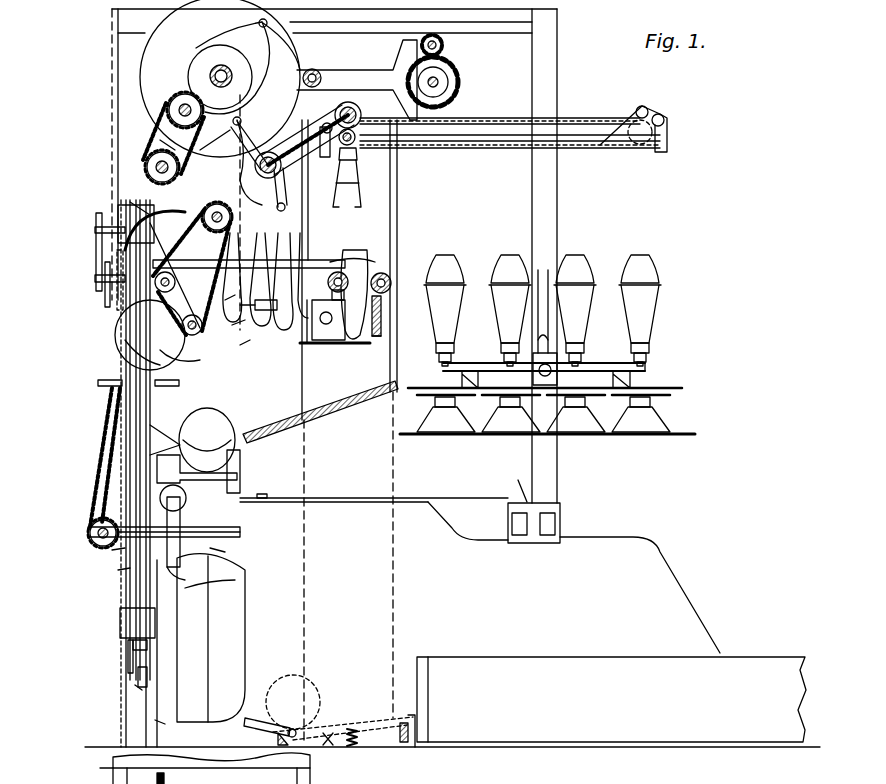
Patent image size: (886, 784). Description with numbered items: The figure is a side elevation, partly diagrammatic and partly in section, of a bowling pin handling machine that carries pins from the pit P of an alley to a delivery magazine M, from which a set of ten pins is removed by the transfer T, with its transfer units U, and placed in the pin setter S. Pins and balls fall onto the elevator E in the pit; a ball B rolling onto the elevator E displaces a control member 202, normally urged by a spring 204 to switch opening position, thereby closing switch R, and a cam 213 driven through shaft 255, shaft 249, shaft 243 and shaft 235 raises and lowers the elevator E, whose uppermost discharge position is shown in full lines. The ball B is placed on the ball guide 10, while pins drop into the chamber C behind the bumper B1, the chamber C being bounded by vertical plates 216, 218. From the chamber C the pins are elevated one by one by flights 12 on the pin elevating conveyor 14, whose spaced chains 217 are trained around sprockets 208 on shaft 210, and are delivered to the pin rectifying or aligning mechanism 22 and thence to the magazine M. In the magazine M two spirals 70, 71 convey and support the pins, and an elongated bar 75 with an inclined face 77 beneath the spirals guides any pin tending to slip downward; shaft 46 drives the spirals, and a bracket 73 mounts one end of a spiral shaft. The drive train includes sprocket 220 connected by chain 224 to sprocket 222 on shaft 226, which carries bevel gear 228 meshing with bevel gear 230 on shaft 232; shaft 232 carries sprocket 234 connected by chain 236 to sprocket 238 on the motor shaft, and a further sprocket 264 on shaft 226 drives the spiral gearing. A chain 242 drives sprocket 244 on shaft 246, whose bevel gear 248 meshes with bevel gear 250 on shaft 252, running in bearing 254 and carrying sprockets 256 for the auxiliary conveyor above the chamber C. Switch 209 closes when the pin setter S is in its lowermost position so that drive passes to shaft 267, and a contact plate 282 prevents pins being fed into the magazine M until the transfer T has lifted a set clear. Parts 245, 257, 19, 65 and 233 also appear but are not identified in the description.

The cam 213 is at (246, 22).
The shaft 235 is at (215, 75).
The shaft 243 is at (182, 104).
The drive chain 245 is at (168, 118).
The shaft 249 is at (160, 140).
The lower sprocket 257 is at (148, 165).
The sprockets 208 is at (140, 185).
The switch 209 is at (130, 202).
The sprocket 220 is at (118, 218).
The shaft 210 is at (96, 230).
The chain 224 is at (96, 250).
The shaft 226 is at (96, 278).
The sprocket 222 is at (105, 296).
The sprocket 264 is at (117, 305).
The chain 236 is at (120, 325).
The sprocket 238 is at (125, 340).
The shaft 267 is at (217, 204).
The feed chain 19 is at (204, 210).
The sprocket 234 is at (185, 338).
The bevel gear 228 is at (170, 355).
The stop block 65 is at (216, 291).
The shaft 232 is at (225, 300).
The bevel gear 230 is at (232, 325).
The shaft 255 is at (240, 345).
The pin rectifying or aligning mechanism 22 is at (280, 260).
The inclined face 77 is at (362, 280).
The delivery magazine M is at (384, 268).
The spiral 70 is at (392, 278).
The spiral 71 is at (383, 305).
The elongated bar 75 is at (383, 330).
The shaft 46 is at (326, 324).
The transfer T is at (405, 161).
The transfer unit U is at (366, 165).
The pin setter S is at (660, 378).
The elevator E is at (322, 428).
The ball B is at (225, 425).
The ball guide 10 is at (237, 463).
The bracket 73 is at (178, 480).
The chain 242 is at (100, 470).
The sprocket 244 is at (100, 503).
The shaft 246 is at (93, 529).
The bevel gear 248 is at (95, 545).
The bevel gear 250 is at (112, 550).
The shaft 252 is at (118, 570).
The chamber C is at (140, 605).
The vertical plate 218 is at (120, 650).
The chains 217 is at (130, 660).
The pin elevating conveyor 14 is at (122, 672).
The flights 12 is at (135, 685).
The vertical plate 216 is at (155, 722).
The bumper B1 is at (245, 618).
The sprockets 256 is at (225, 552).
The bearing 254 is at (235, 580).
The pit P is at (305, 694).
The control member 202 is at (378, 722).
The switch R is at (325, 746).
The spring 204 is at (358, 746).
The contact plate 282 is at (82, 774).
The base block 233 is at (166, 778).